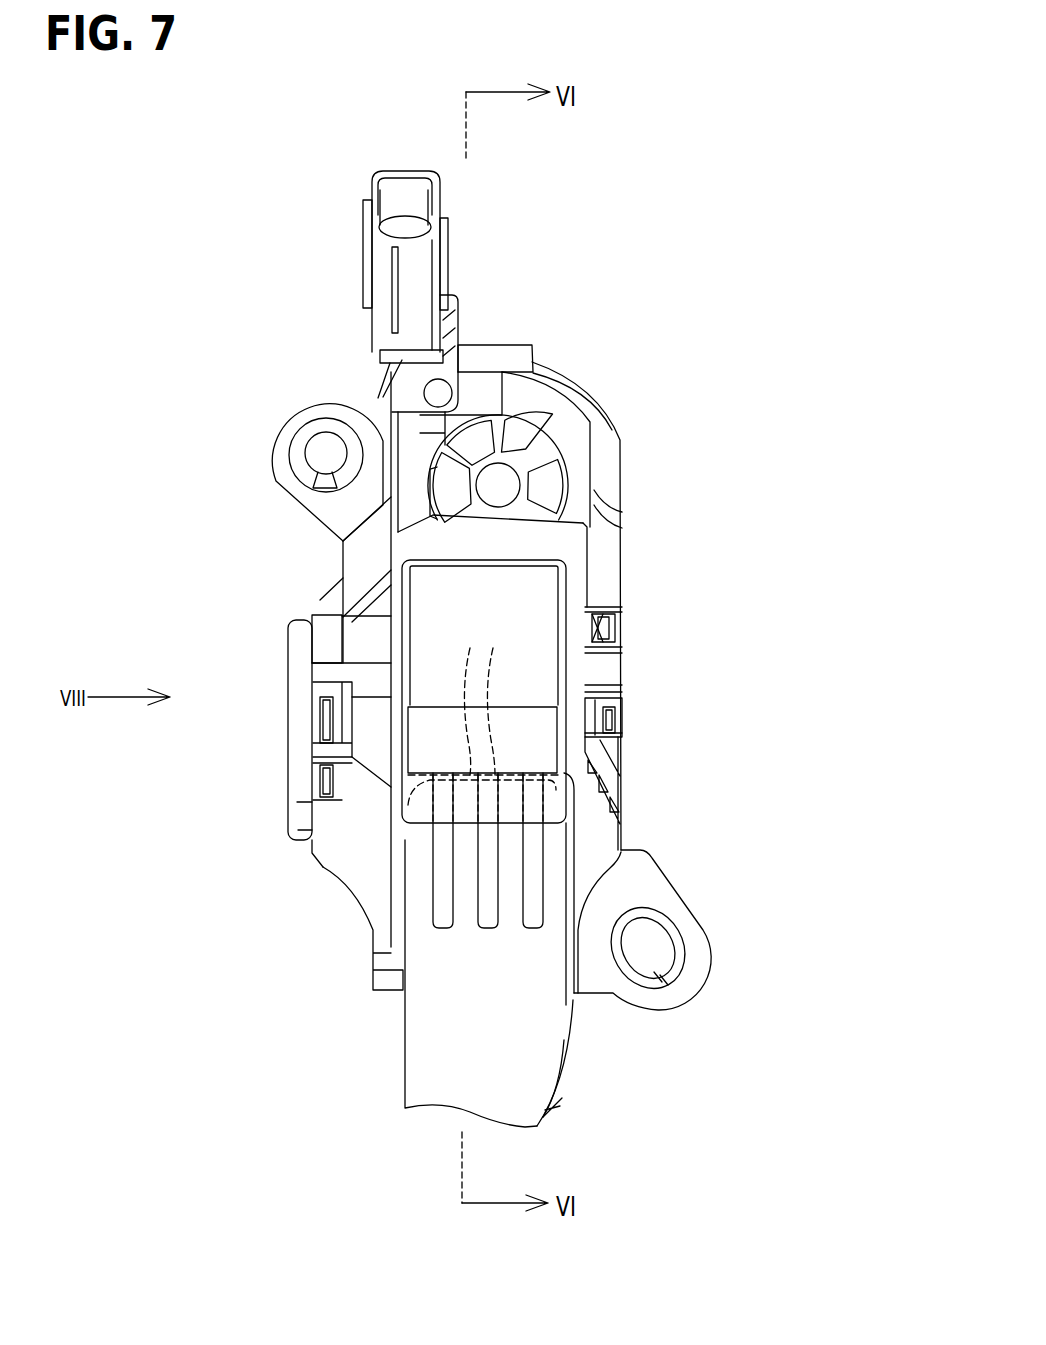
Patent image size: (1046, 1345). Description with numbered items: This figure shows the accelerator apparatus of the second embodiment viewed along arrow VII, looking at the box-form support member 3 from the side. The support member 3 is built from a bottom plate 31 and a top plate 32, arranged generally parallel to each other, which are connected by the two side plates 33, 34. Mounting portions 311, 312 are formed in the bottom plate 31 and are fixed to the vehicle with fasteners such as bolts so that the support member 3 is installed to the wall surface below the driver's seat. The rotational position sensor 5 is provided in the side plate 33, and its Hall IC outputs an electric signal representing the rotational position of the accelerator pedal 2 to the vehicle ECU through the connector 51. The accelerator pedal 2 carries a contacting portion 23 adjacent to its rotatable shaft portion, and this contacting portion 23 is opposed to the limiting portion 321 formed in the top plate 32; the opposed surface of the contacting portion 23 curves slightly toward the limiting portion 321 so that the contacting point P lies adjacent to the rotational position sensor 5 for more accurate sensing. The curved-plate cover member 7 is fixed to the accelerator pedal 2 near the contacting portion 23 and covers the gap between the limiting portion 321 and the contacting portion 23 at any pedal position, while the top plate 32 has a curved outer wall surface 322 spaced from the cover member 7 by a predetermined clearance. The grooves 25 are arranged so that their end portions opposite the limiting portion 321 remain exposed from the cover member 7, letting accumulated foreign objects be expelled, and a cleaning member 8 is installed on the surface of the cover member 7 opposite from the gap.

The accelerator pedal 2 is at (405, 1082).
The support member 3 is at (590, 582).
The rotational position sensor 5 is at (313, 703).
The cover member 7 is at (622, 630).
The cleaning member 8 is at (523, 740).
The contacting portion 23 is at (585, 628).
The grooves 25 is at (443, 872).
The bottom plate 31 is at (383, 397).
The top plate 32 is at (433, 536).
The side plate 33 is at (342, 641).
The side plate 34 is at (587, 670).
The connector 51 is at (372, 270).
The mounting portion 311 is at (287, 447).
The mounting portion 312 is at (693, 973).
The limiting portion 321 is at (495, 775).
The curved outer wall surface 322 is at (587, 702).